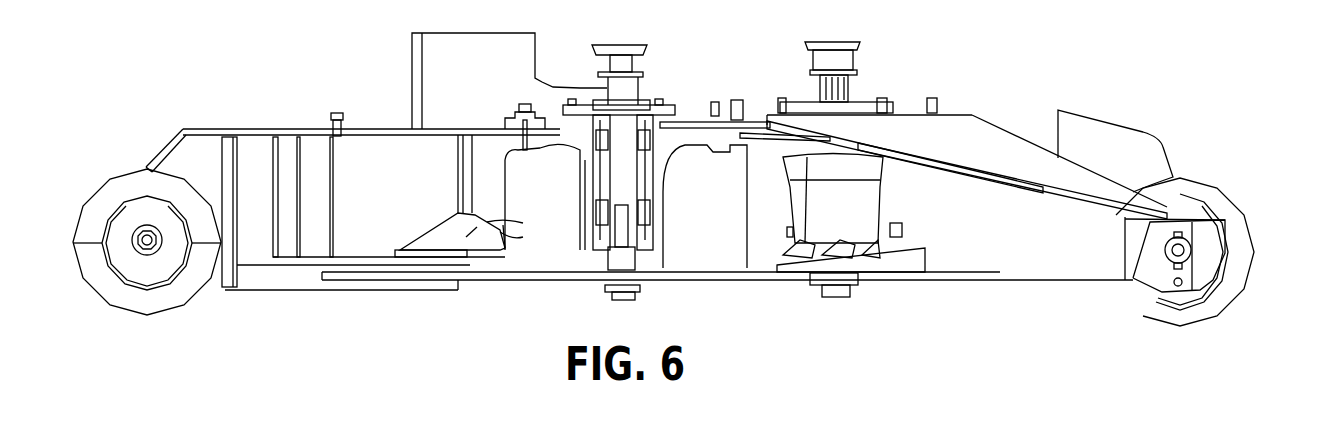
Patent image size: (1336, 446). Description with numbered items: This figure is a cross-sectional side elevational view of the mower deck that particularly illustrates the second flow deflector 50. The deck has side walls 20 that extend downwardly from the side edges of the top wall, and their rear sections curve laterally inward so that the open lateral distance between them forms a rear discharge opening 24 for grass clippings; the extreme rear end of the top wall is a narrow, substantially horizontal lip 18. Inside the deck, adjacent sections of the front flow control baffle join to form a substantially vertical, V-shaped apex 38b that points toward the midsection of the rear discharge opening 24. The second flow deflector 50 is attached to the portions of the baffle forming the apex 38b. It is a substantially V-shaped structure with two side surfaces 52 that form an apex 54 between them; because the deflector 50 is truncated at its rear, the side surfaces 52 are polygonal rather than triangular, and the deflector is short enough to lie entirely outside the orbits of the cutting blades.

The lip 18 is at (1195, 215).
The side walls 20 is at (694, 240).
The rear discharge opening 24 is at (1220, 262).
The V-shaped apex 38b is at (461, 176).
The second flow deflector 50 is at (432, 255).
The side surfaces 52 is at (505, 228).
The apex 54 is at (475, 220).